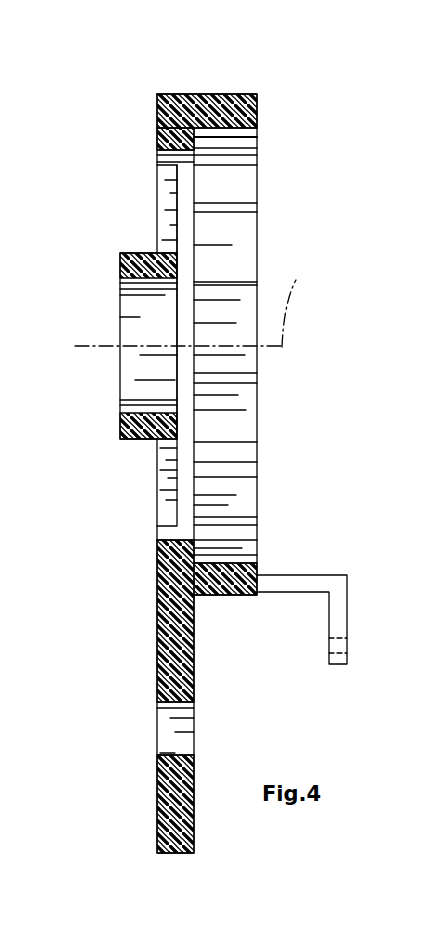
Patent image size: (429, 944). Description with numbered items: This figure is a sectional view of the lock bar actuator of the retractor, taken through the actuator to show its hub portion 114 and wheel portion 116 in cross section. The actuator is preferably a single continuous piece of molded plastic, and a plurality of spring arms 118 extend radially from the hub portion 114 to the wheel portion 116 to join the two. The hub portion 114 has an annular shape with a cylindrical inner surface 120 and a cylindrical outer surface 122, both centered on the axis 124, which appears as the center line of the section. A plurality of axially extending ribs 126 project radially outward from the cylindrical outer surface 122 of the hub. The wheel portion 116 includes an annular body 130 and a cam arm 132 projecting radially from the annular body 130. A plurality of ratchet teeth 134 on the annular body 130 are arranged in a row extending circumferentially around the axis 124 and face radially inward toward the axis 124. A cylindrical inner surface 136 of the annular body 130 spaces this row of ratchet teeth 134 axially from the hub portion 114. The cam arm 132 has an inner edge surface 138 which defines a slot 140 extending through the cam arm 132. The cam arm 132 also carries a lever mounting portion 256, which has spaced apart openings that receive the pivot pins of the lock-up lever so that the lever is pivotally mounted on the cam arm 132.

The hub portion 114 is at (113, 264).
The wheel portion 116 is at (207, 89).
The spring arms 118 is at (172, 193).
The cylindrical inner surface 120 is at (138, 279).
The cylindrical outer surface 122 is at (174, 262).
The axis 124 is at (206, 302).
The ribs 126 is at (143, 258).
The annular body 130 is at (178, 96).
The cam arm 132 is at (168, 650).
The ratchet teeth 134 is at (228, 138).
The cylindrical inner surface 136 is at (184, 150).
The inner edge surface 138 is at (175, 755).
The slot 140 is at (150, 710).
The lever mounting portion 256 is at (348, 607).